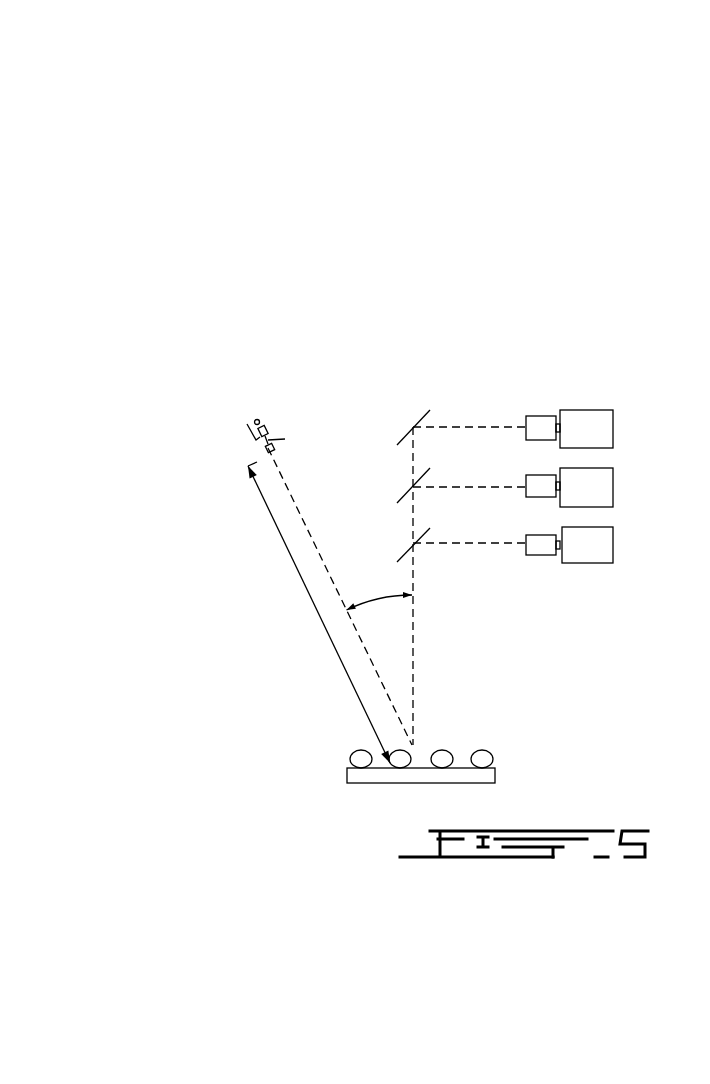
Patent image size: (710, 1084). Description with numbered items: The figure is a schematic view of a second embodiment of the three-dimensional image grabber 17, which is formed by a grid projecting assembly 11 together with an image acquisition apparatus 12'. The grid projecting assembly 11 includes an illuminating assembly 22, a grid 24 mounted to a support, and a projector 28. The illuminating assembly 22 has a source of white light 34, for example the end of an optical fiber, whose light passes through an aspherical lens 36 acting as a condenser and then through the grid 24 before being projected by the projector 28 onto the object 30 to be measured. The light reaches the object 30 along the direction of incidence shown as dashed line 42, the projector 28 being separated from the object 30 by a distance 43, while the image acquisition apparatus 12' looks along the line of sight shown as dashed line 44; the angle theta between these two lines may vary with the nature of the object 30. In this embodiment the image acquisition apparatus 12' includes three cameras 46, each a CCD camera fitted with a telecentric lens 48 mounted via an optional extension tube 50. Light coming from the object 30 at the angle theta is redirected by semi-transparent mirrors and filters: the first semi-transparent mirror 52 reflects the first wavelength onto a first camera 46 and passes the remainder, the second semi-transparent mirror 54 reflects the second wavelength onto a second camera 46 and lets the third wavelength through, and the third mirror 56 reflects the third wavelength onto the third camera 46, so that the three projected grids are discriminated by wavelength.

The grid projecting assembly 11 is at (155, 448).
The image acquisition apparatus 12' is at (568, 427).
The 3D grabber 17 is at (359, 295).
The illuminating assembly 22 is at (250, 435).
The grid 24 is at (268, 437).
The projector 28 is at (275, 453).
The object 30 is at (487, 775).
The source of white light 34 is at (257, 420).
The aspherical lens 36 is at (247, 464).
The direction of incidence of the light 42 is at (317, 543).
The distance 43 is at (278, 533).
The line of sight of the image acquisition apparatus 44 is at (414, 662).
The camera 46 is at (607, 428).
The telecentric lens 48 is at (535, 431).
The extension tube 50 is at (558, 423).
The first semi-transparent mirror 52 is at (422, 535).
The second semi-transparent mirror 54 is at (412, 486).
The third mirror 56 is at (397, 445).
The angle theta is at (380, 590).